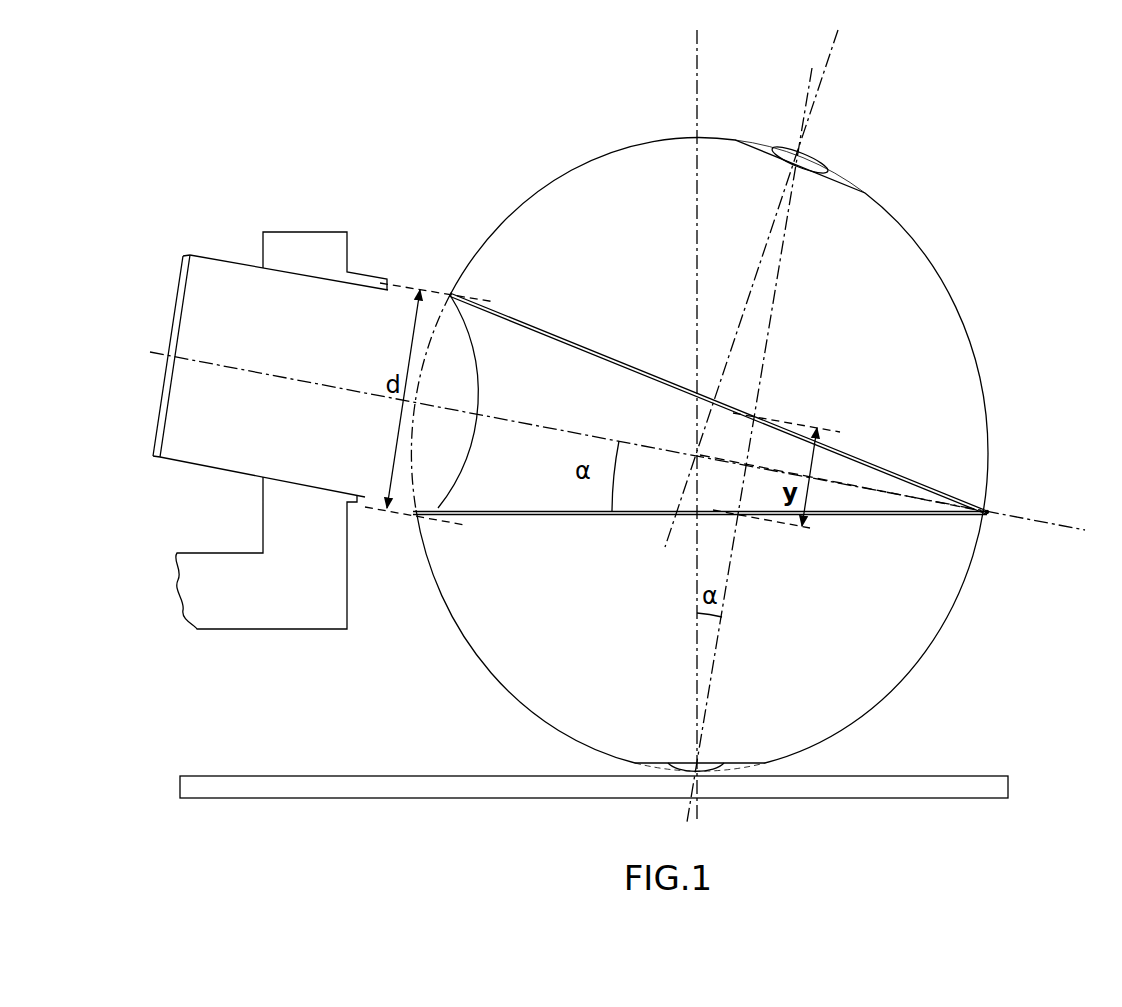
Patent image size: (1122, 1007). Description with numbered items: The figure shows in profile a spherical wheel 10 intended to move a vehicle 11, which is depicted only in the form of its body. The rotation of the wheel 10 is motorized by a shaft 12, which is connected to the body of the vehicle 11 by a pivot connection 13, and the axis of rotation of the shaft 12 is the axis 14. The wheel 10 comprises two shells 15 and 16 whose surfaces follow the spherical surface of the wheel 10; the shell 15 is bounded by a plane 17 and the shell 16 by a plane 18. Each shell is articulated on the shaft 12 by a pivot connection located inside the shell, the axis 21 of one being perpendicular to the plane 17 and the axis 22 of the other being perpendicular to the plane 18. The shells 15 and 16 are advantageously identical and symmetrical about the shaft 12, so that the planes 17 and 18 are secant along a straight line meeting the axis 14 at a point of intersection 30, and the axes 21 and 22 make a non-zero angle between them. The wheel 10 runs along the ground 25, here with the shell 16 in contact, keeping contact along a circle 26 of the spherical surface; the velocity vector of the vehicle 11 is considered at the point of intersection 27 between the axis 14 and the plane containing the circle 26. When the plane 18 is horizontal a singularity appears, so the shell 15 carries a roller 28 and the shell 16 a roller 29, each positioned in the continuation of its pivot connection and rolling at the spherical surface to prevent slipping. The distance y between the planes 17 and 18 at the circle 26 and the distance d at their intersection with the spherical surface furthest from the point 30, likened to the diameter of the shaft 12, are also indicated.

The spherical wheel 10 is at (1047, 249).
The vehicle 11 is at (254, 603).
The shaft 12 is at (215, 282).
The pivot connection 13 is at (292, 272).
The axis of rotation of the shaft 14 is at (150, 352).
The first shell 15 is at (570, 187).
The second shell 16 is at (492, 655).
The plane bounding the first shell 17 is at (565, 340).
The plane bounding the second shell 18 is at (573, 518).
The axis of the first pivot connection 21 is at (768, 238).
The axis of the second pivot connection 22 is at (697, 660).
The ground 25 is at (975, 776).
The circle of contact 26 is at (768, 345).
The point of intersection 27 is at (750, 463).
The roller of the first shell 28 is at (800, 158).
The roller of the second shell 29 is at (720, 773).
The point of intersection of the planes with the shaft axis 30 is at (997, 511).